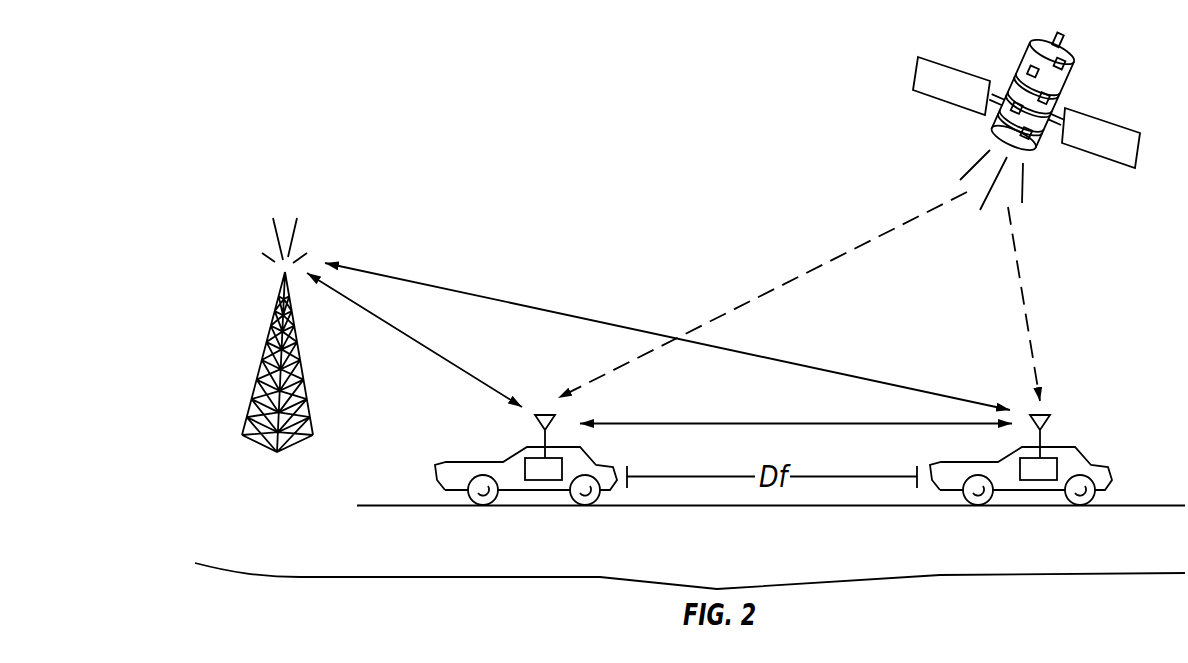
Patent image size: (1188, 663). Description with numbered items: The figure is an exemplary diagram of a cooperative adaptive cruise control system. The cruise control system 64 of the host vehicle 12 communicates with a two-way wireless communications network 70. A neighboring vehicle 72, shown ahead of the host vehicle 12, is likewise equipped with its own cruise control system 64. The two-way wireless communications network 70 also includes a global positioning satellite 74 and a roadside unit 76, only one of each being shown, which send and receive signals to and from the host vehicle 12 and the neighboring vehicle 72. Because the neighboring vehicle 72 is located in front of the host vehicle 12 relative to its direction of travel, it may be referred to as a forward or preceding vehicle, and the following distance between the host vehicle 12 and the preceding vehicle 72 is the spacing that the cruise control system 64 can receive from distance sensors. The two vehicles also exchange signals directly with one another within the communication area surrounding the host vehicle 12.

The two-way wireless communications network 70 is at (545, 115).
The global positioning satellite 74 is at (1017, 67).
The roadside unit 76 is at (263, 338).
The neighboring vehicle 72 is at (468, 462).
The host vehicle 12 is at (1088, 465).
The cruise control system 64 is at (543, 468).